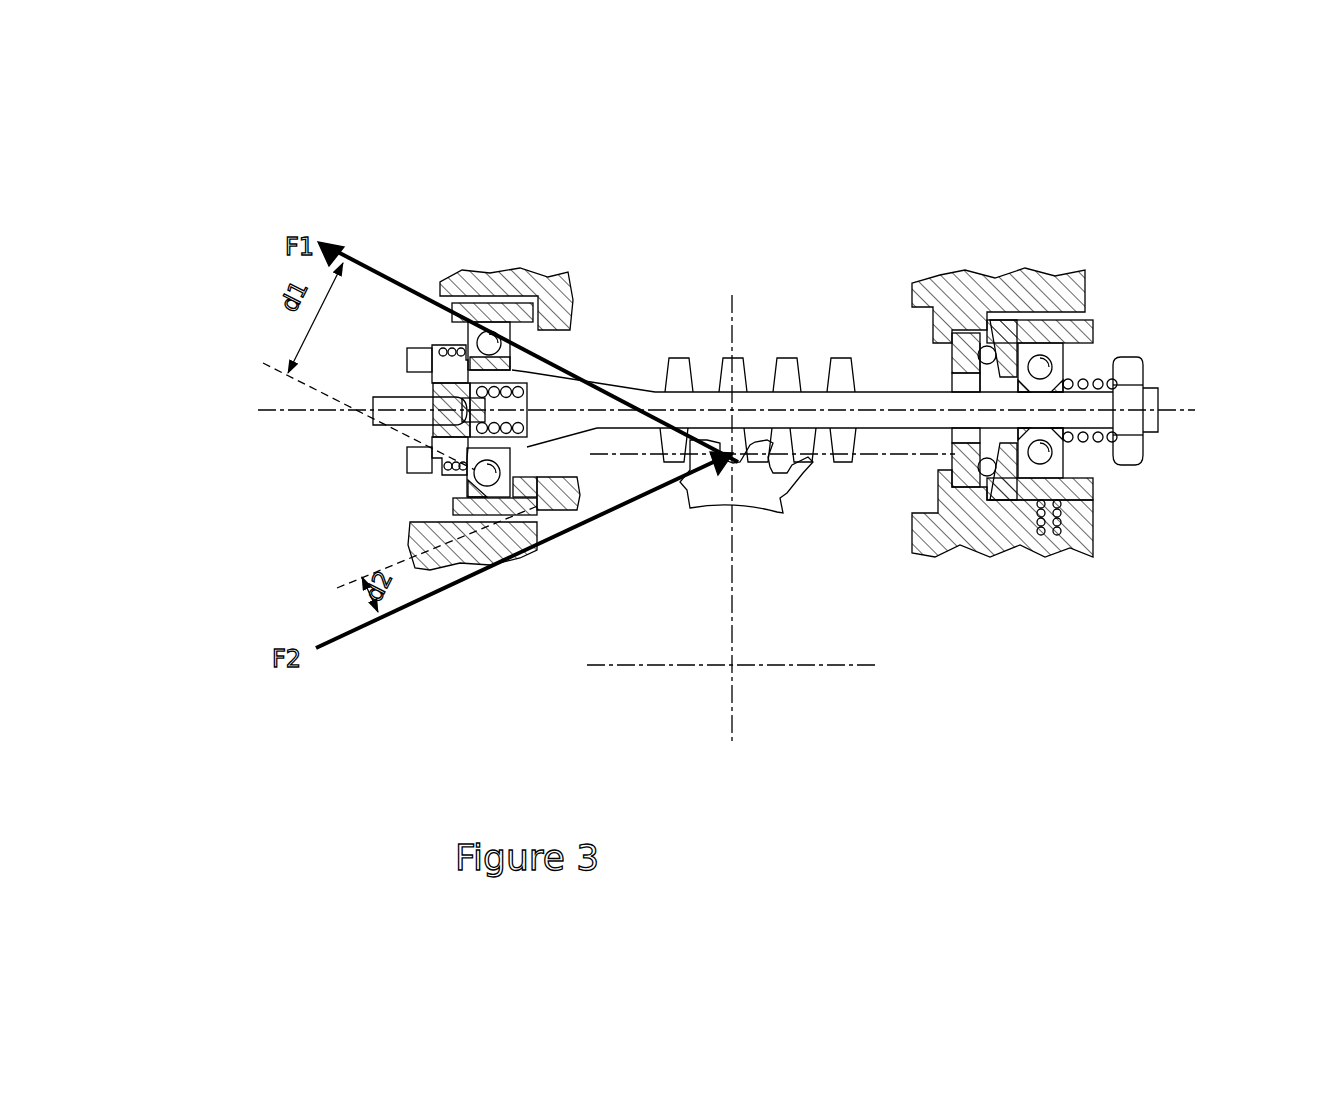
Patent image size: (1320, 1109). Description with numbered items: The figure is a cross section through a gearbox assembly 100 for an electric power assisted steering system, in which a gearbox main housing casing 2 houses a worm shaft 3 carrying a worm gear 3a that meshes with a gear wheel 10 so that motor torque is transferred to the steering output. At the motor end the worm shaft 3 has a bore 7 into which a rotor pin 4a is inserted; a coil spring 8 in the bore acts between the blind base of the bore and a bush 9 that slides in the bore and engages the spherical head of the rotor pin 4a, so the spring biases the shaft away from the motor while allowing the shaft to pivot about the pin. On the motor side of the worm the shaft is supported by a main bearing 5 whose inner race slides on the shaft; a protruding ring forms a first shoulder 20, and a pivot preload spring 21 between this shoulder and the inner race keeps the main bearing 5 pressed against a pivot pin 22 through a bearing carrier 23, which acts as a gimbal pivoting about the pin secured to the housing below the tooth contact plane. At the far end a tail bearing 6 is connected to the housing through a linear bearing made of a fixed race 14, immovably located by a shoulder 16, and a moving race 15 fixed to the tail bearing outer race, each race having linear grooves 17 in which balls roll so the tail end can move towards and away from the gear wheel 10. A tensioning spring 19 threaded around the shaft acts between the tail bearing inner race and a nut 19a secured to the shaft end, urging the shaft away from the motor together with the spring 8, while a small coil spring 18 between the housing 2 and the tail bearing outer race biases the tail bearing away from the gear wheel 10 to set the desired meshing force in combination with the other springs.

The gearbox main housing casing 2 is at (520, 272).
The worm shaft 3 is at (842, 392).
The worm gear 3a is at (742, 357).
The rotor pin 4a is at (375, 415).
The main bearing 5 is at (478, 355).
The tail bearing 6 is at (1025, 362).
The bore 7 is at (512, 370).
The coil spring 8 is at (514, 400).
The bush 9 is at (430, 387).
The gear wheel 10 is at (765, 493).
The fixed race 14 is at (953, 365).
The moving race 15 is at (995, 357).
The shoulder 16 is at (970, 343).
The linear grooves 17 is at (982, 345).
The small coil spring 18 is at (1050, 532).
The spring 19 is at (1087, 445).
The nut 19a is at (1123, 360).
The first shoulder 20 is at (442, 345).
The pivot preload spring 21 is at (462, 350).
The pivot pin 22 is at (545, 509).
The bearing carrier 23 is at (507, 520).
The gearbox assembly 100 is at (1003, 772).